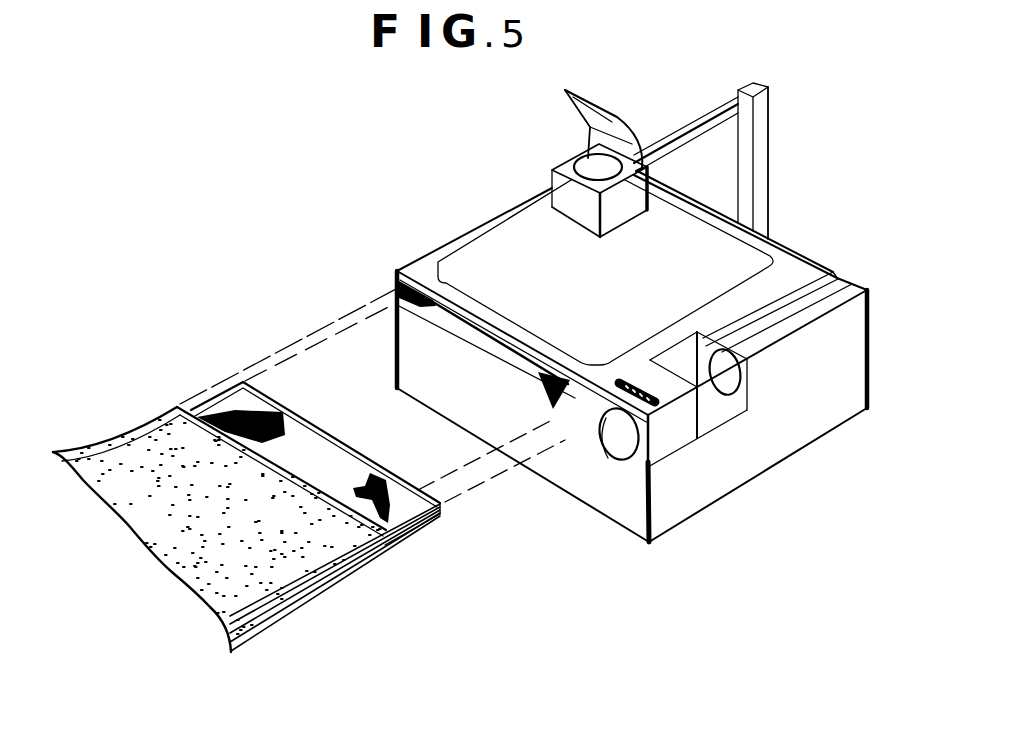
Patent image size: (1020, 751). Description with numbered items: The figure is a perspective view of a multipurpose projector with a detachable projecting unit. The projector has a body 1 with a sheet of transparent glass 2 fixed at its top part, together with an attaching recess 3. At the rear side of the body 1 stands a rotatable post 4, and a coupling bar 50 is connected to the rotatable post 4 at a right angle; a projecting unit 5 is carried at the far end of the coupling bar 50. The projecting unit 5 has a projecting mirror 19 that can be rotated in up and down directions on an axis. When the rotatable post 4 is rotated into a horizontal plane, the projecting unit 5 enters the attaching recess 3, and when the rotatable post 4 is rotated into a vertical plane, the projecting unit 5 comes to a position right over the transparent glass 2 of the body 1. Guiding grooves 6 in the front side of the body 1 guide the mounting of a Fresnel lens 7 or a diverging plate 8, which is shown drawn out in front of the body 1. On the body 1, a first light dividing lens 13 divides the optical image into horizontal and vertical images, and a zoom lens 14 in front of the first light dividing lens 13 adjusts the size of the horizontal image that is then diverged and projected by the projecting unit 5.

The body 1 is at (658, 351).
The transparent glass 2 is at (640, 266).
The attaching recess 3 is at (745, 401).
The rotatable post 4 is at (780, 161).
The projecting unit 5 is at (561, 190).
The guiding grooves 6 is at (308, 342).
The Fresnel lens 7 is at (378, 466).
The diverging plate 8 is at (246, 529).
The first light dividing lens 13 is at (727, 377).
The zoom lens 14 is at (601, 474).
The projecting mirror 19 is at (562, 130).
The coupling bar 50 is at (677, 122).